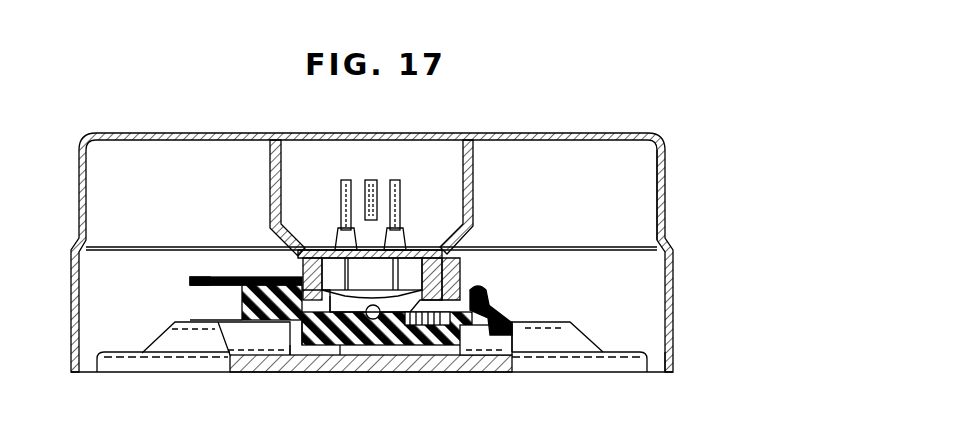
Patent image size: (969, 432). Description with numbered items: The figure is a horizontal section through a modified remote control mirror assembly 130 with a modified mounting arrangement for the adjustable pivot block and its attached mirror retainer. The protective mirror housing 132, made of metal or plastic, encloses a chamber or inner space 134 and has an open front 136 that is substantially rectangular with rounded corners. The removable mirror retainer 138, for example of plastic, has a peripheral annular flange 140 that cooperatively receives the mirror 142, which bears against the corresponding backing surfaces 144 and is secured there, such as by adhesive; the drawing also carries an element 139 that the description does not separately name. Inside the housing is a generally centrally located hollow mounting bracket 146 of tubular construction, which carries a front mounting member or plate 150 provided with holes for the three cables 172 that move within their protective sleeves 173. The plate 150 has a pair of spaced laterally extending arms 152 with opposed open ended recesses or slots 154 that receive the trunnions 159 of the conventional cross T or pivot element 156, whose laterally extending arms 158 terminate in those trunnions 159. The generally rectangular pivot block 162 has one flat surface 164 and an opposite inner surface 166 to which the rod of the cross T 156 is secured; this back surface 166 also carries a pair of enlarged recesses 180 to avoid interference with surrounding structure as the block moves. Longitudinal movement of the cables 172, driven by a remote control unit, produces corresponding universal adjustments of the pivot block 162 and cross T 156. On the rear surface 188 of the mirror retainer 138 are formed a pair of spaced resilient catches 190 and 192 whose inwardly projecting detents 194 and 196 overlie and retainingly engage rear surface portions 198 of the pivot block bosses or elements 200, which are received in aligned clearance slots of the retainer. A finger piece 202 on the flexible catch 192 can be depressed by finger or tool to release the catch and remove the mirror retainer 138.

The remote control mirror assembly 130 is at (584, 130).
The mirror housing 132 is at (665, 211).
The chamber 134 is at (637, 178).
The open front 136 is at (660, 374).
The mirror retainer 138 is at (627, 350).
The sealing member 139 is at (470, 374).
The peripheral annular flange 140 is at (655, 376).
The mirror 142 is at (490, 374).
The backing surfaces 144 is at (190, 363).
The mounting bracket 146 is at (270, 186).
The front mounting plate 150 is at (414, 252).
The laterally extending arms 152 is at (458, 251).
The open ended recesses 154 is at (455, 292).
The cross T pivot element 156 is at (362, 296).
The laterally extending arms 158 is at (402, 362).
The trunnions 159 is at (308, 290).
The pivot block 162 is at (366, 348).
The flat surface 164 is at (309, 362).
The inner surface 166 is at (343, 372).
The cables 172 is at (340, 271).
The protective sleeves 173 is at (341, 192).
The enlarged recesses 180 is at (292, 368).
The rear surface 188 is at (181, 322).
The resilient catch 190 is at (496, 319).
The flexible catch 192 is at (245, 303).
The detent 194 is at (492, 305).
The detent 196 is at (238, 291).
The rear surface portions 198 is at (480, 292).
The mount bosses 200 is at (470, 332).
The finger piece 202 is at (204, 280).